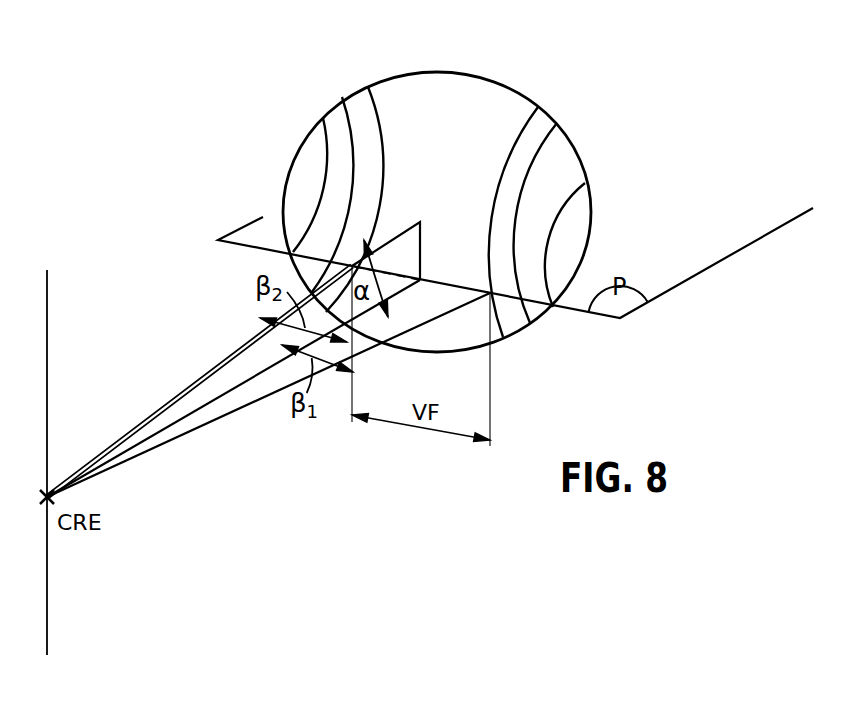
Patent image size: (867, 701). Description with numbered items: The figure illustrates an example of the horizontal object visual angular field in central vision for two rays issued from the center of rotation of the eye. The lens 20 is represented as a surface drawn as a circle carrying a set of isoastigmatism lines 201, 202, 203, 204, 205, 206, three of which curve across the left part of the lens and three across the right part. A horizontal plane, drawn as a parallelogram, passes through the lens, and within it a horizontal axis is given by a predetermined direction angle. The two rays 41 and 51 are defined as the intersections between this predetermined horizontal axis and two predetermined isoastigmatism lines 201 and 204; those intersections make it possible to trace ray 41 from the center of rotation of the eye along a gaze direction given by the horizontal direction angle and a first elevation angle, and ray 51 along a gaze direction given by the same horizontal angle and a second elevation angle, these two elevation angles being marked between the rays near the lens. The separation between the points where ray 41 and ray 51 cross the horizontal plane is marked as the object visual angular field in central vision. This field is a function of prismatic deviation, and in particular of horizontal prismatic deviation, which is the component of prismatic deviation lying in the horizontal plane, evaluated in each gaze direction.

The lens 20 is at (477, 80).
The isoastigmatism line 201 is at (528, 137).
The isoastigmatism line 202 is at (550, 162).
The isoastigmatism line 203 is at (560, 194).
The isoastigmatism line 204 is at (381, 108).
The isoastigmatism line 205 is at (352, 120).
The isoastigmatism line 206 is at (322, 144).
The ray 51 is at (233, 354).
The ray 41 is at (247, 407).